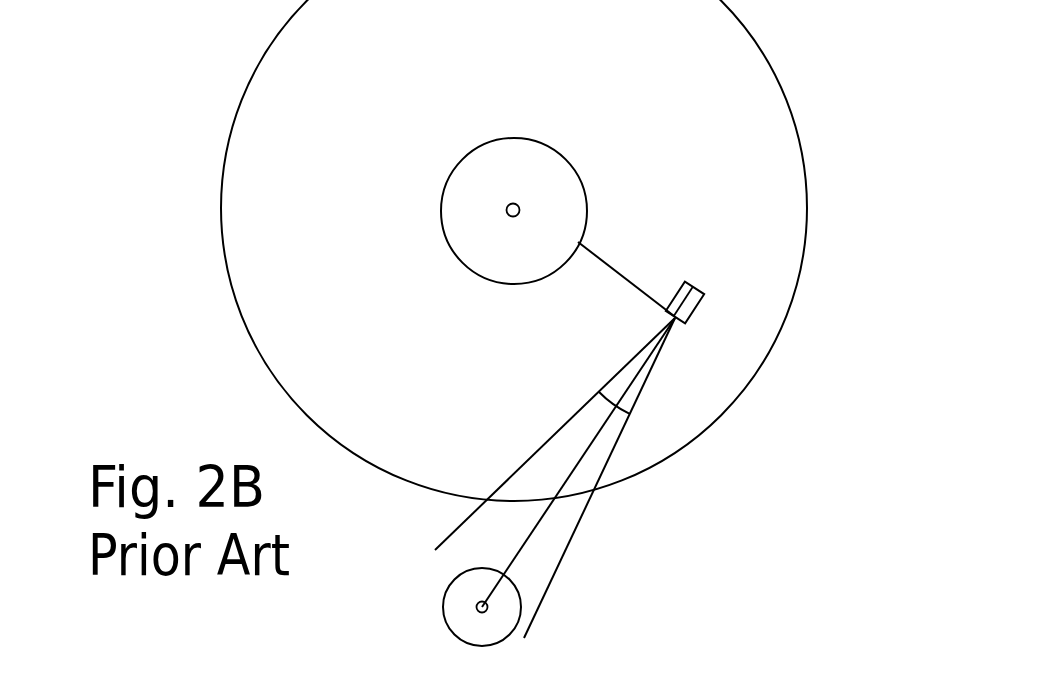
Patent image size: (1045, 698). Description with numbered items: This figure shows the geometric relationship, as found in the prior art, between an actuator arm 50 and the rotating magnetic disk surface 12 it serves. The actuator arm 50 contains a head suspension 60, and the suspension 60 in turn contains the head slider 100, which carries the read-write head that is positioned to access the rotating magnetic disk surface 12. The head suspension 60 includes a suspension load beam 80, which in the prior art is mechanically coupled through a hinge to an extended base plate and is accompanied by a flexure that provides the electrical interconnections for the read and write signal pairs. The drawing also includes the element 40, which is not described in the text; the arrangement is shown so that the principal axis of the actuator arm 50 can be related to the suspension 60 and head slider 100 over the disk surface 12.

The rotating magnetic disk surface 12 is at (310, 228).
The suspension load beam 80 is at (543, 190).
The head slider 100 is at (702, 309).
The actuator arm 50 is at (604, 467).
The suspension 60 is at (646, 375).
The actuator pivot 40 is at (445, 625).